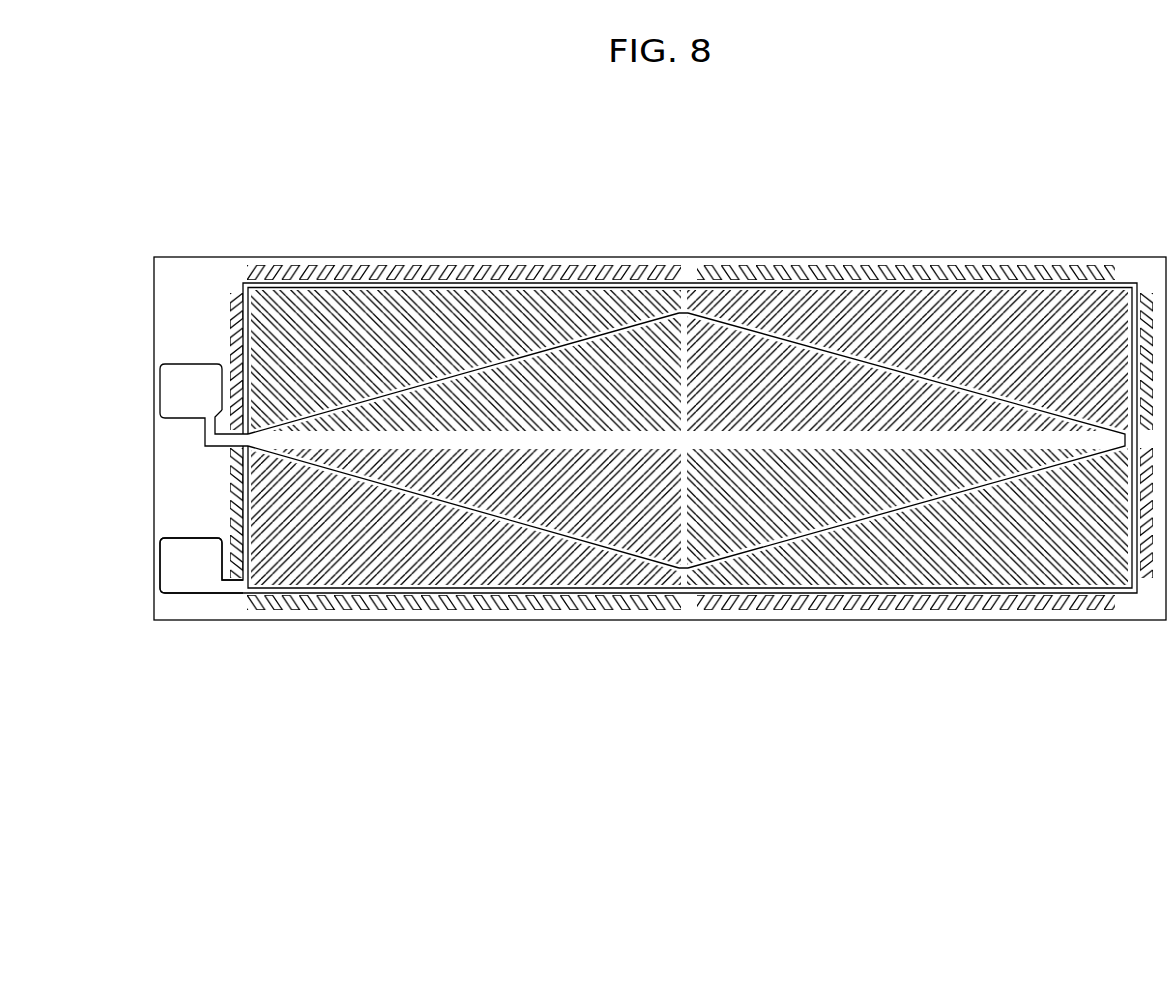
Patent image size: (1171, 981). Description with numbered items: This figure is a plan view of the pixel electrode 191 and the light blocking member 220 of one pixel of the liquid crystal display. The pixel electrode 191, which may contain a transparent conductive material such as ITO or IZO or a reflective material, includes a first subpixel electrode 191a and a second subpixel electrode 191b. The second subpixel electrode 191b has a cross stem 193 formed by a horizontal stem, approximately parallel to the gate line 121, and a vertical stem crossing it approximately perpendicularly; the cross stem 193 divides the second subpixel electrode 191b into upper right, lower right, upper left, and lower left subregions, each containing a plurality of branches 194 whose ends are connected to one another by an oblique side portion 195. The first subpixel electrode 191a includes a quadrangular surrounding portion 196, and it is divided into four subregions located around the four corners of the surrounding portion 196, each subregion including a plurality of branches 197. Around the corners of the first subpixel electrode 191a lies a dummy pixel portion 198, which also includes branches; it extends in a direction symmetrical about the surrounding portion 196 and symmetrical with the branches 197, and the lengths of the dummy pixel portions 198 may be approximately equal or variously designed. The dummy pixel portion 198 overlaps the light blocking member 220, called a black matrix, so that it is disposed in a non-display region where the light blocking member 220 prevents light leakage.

The gate line 121 is at (462, 622).
The pixel electrode 191 is at (443, 551).
The first subpixel electrode 191a is at (606, 594).
The second subpixel electrode 191b is at (693, 586).
The cross stem 193 is at (682, 314).
The branches 194 is at (653, 332).
The oblique side portion 195 is at (575, 345).
The surrounding portion 196 is at (396, 288).
The branches 197 is at (462, 305).
The dummy pixel portion 198 is at (318, 268).
The light blocking member 220 is at (800, 596).